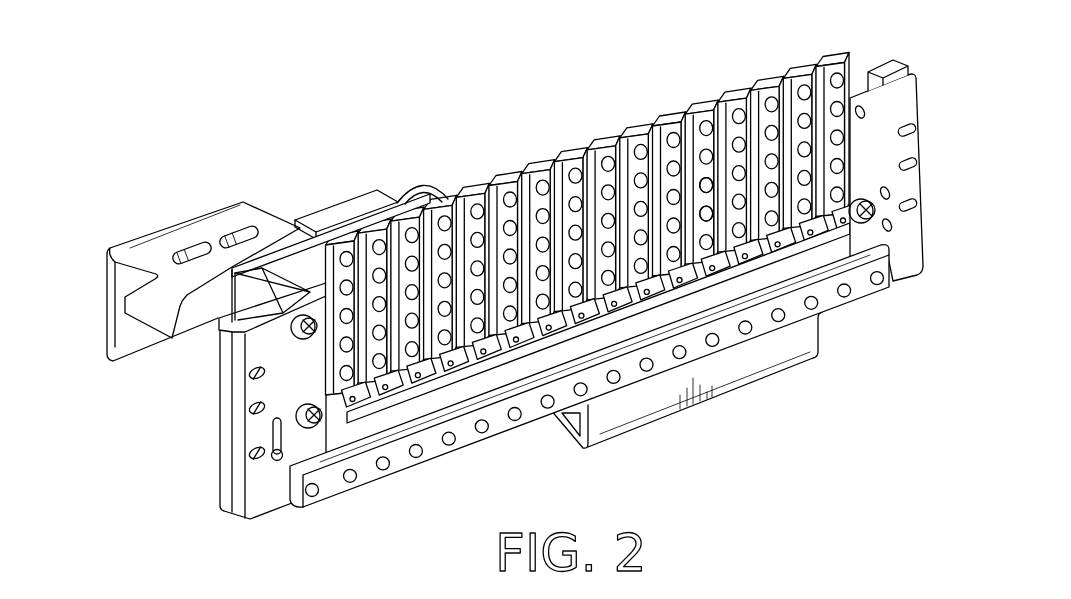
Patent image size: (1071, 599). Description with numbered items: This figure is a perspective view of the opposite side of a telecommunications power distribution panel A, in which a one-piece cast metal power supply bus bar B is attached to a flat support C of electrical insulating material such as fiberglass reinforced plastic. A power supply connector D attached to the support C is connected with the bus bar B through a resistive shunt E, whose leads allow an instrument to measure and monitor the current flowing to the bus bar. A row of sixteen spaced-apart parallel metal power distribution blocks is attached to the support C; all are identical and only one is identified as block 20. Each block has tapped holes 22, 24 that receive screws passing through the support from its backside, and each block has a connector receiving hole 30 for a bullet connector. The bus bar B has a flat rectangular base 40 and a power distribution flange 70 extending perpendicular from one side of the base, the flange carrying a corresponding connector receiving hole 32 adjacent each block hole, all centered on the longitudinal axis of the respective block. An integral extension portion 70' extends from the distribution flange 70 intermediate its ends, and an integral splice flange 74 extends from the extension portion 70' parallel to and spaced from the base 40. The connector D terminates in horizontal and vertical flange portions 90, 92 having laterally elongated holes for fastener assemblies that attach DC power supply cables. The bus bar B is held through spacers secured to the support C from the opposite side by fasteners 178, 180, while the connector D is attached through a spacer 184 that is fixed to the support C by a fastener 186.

The power distribution block 20 is at (700, 104).
The tapped hole 22 is at (704, 178).
The tapped hole 24 is at (704, 214).
The connector receiving hole 30 is at (710, 256).
The connector receiving hole 32 is at (719, 347).
The base 40 is at (409, 405).
The power distribution flange 70 is at (589, 376).
The extension portion 70' is at (737, 379).
The splice flange 74 is at (556, 436).
The horizontal flange portion 90 is at (259, 208).
The vertical flange portion 92 is at (132, 347).
The fastener 178 is at (303, 427).
The fastener 180 is at (876, 218).
The spacer 184 is at (255, 283).
The fastener 186 is at (291, 330).
The telecommunications power distribution panel A is at (588, 217).
The power supply bus bar B is at (715, 408).
The flat support C is at (897, 154).
The power supply connector D is at (202, 286).
The resistive shunt E is at (352, 199).